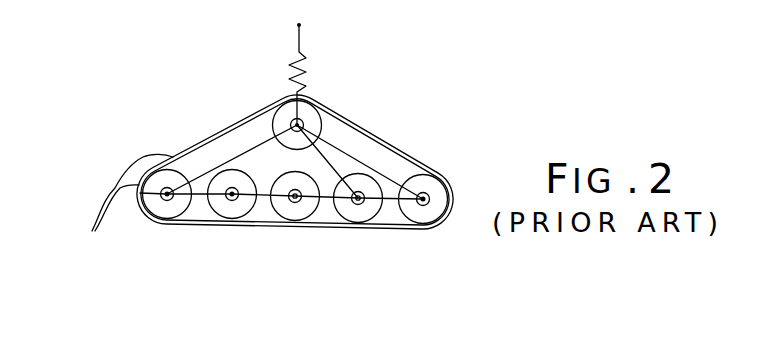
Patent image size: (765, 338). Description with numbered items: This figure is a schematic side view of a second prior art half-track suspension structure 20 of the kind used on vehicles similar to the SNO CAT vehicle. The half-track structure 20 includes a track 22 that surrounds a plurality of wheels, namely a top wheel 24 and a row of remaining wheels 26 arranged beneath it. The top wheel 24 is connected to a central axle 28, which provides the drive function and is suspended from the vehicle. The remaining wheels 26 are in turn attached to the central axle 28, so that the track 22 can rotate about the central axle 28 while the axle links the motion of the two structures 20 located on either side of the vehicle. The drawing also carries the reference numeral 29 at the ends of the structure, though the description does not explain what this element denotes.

The half-track structure 20 is at (176, 91).
The track 22 is at (187, 145).
The top wheel 24 is at (320, 128).
The remaining wheels 26 is at (165, 226).
The central axle 28 is at (298, 122).
The guide arms / skid 29 is at (92, 231).